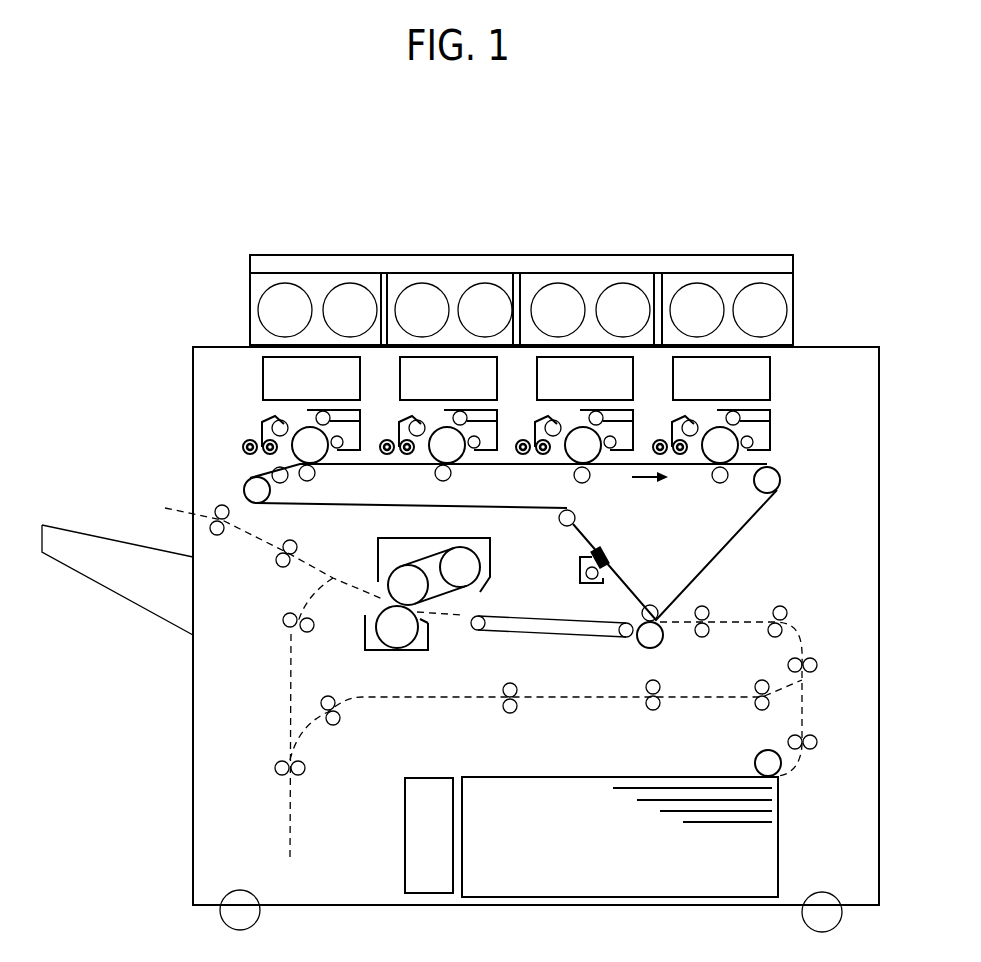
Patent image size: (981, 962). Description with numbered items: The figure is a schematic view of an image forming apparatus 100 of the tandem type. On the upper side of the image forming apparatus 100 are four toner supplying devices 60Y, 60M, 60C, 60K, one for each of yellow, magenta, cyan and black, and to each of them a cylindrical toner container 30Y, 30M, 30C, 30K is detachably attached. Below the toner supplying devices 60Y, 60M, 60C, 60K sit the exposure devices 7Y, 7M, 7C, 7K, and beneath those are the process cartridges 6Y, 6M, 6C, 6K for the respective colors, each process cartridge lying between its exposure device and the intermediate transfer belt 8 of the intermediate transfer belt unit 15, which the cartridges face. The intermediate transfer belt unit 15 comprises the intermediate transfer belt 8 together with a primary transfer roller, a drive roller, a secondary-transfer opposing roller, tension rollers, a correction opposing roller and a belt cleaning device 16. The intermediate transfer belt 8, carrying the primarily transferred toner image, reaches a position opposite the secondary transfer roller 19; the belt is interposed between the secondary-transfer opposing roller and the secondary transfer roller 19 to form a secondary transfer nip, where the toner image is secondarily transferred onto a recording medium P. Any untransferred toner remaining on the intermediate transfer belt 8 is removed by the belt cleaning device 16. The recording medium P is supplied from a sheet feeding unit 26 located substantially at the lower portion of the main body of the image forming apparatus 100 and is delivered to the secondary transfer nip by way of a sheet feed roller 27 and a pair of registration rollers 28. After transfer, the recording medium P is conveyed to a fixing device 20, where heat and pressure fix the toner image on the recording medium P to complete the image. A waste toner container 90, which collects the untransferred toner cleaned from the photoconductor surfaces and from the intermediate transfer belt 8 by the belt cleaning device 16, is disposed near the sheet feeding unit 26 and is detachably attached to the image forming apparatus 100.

The image forming apparatus 100 is at (812, 246).
The toner container 30Y is at (287, 291).
The toner supplying device 60Y is at (347, 284).
The toner container 30M is at (425, 291).
The toner supplying device 60M is at (486, 284).
The toner container 30C is at (562, 291).
The toner supplying device 60C is at (622, 284).
The toner container 30K is at (699, 291).
The toner supplying device 60K is at (759, 284).
The exposure device 7Y is at (299, 391).
The exposure device 7M is at (434, 391).
The exposure device 7C is at (573, 391).
The exposure device 7K is at (709, 391).
The process cartridge 6Y is at (310, 435).
The process cartridge 6M is at (460, 438).
The process cartridge 6C is at (593, 443).
The process cartridge 6K is at (737, 437).
The intermediate transfer belt 8 is at (532, 508).
The intermediate transfer belt unit 15 is at (575, 548).
The belt cleaning device 16 is at (578, 583).
The secondary transfer roller 19 is at (642, 643).
The fixing device 20 is at (443, 626).
The sheet feeding unit 26 is at (497, 793).
The sheet feed roller 27 is at (760, 757).
The pair of registration rollers 28 is at (700, 637).
The waste toner container 90 is at (420, 828).
The recording medium P is at (718, 823).